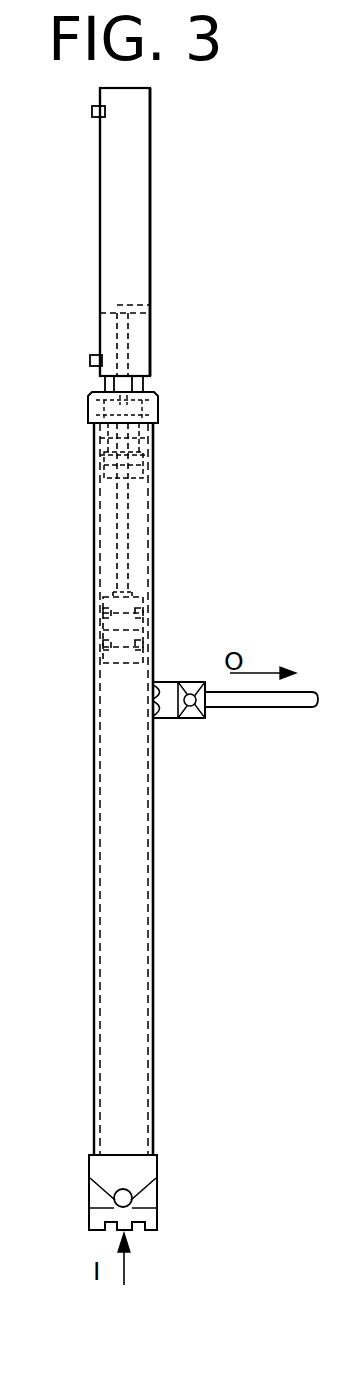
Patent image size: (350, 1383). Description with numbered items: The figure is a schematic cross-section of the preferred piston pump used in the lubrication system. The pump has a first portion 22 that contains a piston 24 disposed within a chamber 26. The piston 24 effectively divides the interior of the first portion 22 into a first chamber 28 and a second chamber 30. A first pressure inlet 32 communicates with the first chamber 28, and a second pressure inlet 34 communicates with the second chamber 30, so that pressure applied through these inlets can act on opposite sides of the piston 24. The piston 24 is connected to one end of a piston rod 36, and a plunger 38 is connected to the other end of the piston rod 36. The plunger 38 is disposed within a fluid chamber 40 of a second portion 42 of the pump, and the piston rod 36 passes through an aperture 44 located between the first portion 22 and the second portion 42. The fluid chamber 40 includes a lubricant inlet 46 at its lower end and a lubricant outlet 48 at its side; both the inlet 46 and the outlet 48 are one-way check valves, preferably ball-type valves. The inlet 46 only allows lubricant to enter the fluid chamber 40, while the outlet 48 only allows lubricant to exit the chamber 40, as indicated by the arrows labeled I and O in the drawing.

The first portion 22 is at (150, 188).
The piston 24 is at (106, 302).
The chamber 26 is at (120, 220).
The first chamber 28 is at (140, 352).
The second chamber 30 is at (138, 275).
The first pressure inlet 32 is at (90, 360).
The second pressure inlet 34 is at (92, 112).
The piston rod 36 is at (130, 525).
The plunger 38 is at (97, 625).
The fluid chamber 40 is at (135, 797).
The second portion 42 is at (94, 935).
The aperture 44 is at (140, 385).
The lubricant inlet 46 is at (112, 1201).
The lubricant outlet 48 is at (186, 718).